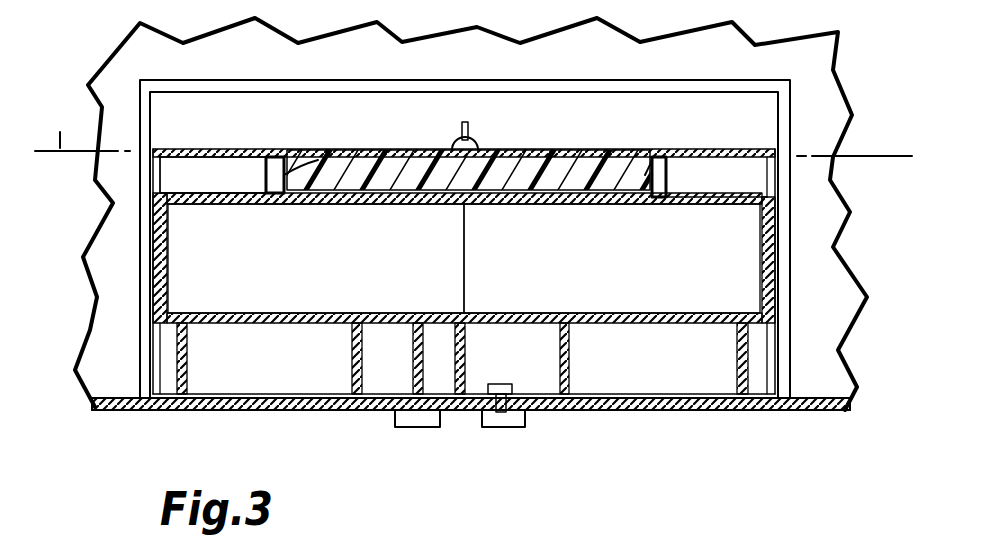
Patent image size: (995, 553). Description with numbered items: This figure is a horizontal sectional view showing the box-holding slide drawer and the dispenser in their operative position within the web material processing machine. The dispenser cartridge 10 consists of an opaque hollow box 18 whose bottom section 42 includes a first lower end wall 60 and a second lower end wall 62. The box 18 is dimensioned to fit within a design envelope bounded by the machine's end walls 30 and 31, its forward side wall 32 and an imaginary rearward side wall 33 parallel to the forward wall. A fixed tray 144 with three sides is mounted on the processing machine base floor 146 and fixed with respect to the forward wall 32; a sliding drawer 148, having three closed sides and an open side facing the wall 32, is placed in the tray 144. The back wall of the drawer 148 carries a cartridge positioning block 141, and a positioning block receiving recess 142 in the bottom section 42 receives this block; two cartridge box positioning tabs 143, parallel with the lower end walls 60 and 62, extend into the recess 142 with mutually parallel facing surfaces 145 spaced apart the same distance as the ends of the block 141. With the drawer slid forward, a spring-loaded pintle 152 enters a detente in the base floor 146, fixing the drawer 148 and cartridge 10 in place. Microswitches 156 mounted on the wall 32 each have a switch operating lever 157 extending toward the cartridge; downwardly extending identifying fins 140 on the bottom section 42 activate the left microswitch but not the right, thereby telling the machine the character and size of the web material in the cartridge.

The dispenser cartridge 10 is at (494, 242).
The hollow box 18 is at (692, 412).
The end wall 30 is at (145, 228).
The end wall 31 is at (788, 272).
The forward side wall 32 is at (240, 408).
The imaginary rearward side wall 33 is at (862, 176).
The bottom section 42 is at (298, 318).
The first lower end wall 60 is at (170, 262).
The second lower end wall 62 is at (760, 248).
The identifying fins 140 is at (430, 338).
The cartridge positioning block 141 is at (555, 150).
The positioning block receiving recess 142 is at (430, 205).
The cartridge box positioning tabs 143 is at (288, 155).
The fixed tray 144 is at (343, 82).
The facing surfaces 145 is at (292, 172).
The processing machine base floor 146 is at (506, 53).
The sliding drawer 148 is at (152, 171).
The spring-loaded pintle 152 is at (464, 127).
The microswitches 156 is at (497, 419).
The switch operating lever 157 is at (515, 393).